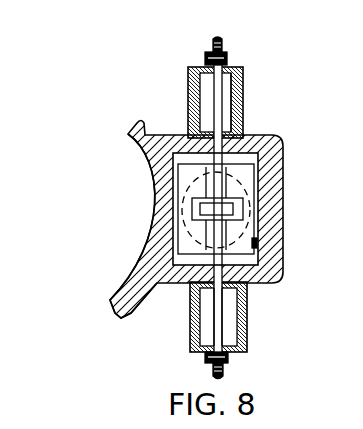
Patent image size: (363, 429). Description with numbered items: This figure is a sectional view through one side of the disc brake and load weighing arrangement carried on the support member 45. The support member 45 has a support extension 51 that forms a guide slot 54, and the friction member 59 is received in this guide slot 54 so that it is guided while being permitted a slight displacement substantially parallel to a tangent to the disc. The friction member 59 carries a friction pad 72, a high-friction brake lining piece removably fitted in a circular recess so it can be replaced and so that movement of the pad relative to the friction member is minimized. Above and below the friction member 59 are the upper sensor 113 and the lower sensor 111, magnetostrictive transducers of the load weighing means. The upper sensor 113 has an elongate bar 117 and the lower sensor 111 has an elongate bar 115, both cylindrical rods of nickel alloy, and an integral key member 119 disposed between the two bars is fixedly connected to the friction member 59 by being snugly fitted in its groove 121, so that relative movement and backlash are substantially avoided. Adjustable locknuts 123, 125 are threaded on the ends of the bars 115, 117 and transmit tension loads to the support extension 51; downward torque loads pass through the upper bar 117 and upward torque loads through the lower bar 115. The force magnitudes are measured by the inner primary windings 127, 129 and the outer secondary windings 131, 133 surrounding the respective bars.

The support member 45 is at (127, 315).
The support extension 51 is at (273, 153).
The guide slot 54 is at (256, 246).
The friction member 59 is at (250, 266).
The friction pad 72 is at (283, 163).
The lower sensor 111 is at (190, 363).
The upper sensor 113 is at (168, 92).
The bar 115 is at (220, 329).
The bar 117 is at (243, 68).
The key member 119 is at (238, 203).
The groove 121 is at (233, 210).
The locknut 123 is at (230, 362).
The locknut 125 is at (228, 56).
The primary winding 127 is at (227, 304).
The primary winding 129 is at (226, 98).
The secondary winding 131 is at (233, 322).
The secondary winding 133 is at (232, 112).